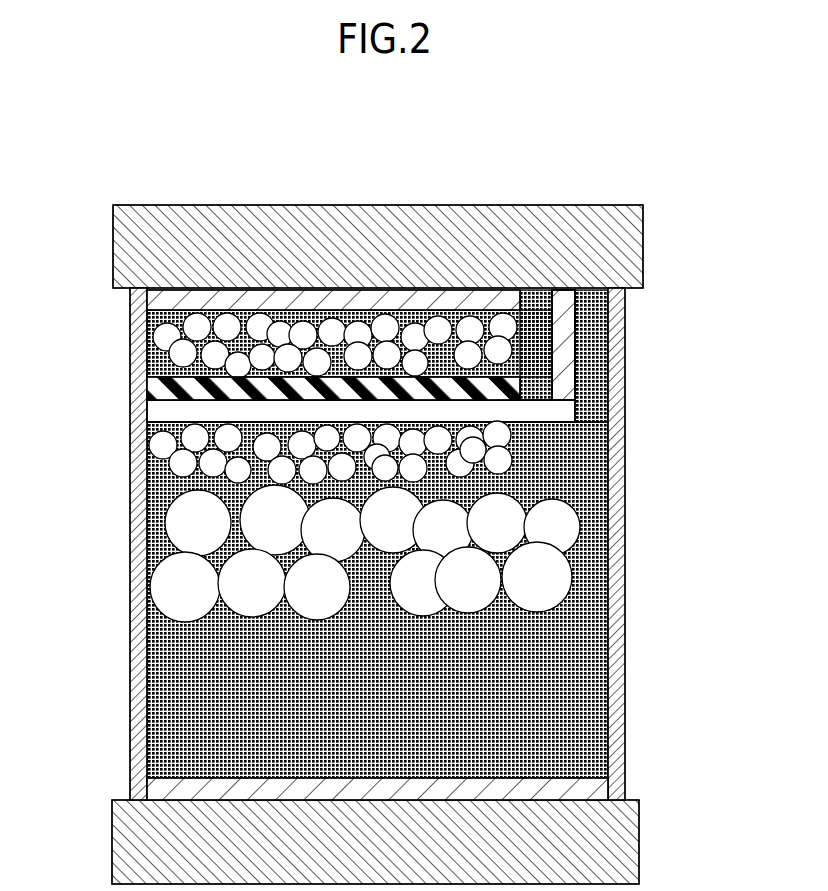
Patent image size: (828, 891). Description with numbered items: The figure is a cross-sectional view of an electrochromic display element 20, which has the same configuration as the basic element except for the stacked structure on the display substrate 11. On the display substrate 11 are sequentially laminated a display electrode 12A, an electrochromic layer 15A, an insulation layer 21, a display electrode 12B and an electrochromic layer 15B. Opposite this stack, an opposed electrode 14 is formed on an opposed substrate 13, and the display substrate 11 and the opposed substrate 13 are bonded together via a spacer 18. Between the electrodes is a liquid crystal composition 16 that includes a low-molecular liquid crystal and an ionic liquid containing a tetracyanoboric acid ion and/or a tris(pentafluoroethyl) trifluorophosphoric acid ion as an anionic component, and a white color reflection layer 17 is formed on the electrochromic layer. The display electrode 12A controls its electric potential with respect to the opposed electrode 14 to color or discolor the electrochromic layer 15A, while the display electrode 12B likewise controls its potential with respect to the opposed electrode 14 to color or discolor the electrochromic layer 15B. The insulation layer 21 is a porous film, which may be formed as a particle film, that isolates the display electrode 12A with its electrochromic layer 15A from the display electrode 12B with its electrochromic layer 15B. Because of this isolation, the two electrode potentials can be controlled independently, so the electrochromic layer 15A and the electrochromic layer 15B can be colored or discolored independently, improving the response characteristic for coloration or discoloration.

The electrochromic display element 20 is at (700, 182).
The display substrate 11 is at (630, 248).
The display electrode 12A is at (160, 300).
The electrochromic layer 15A is at (178, 358).
The insulation layer 21 is at (158, 386).
The display electrode 12B is at (160, 413).
The electrochromic layer 15B is at (177, 472).
The spacer 18 is at (615, 430).
The white color reflection layer 17 is at (538, 573).
The liquid crystal composition 16 is at (177, 650).
The opposed electrode 14 is at (158, 789).
The opposed substrate 13 is at (630, 840).